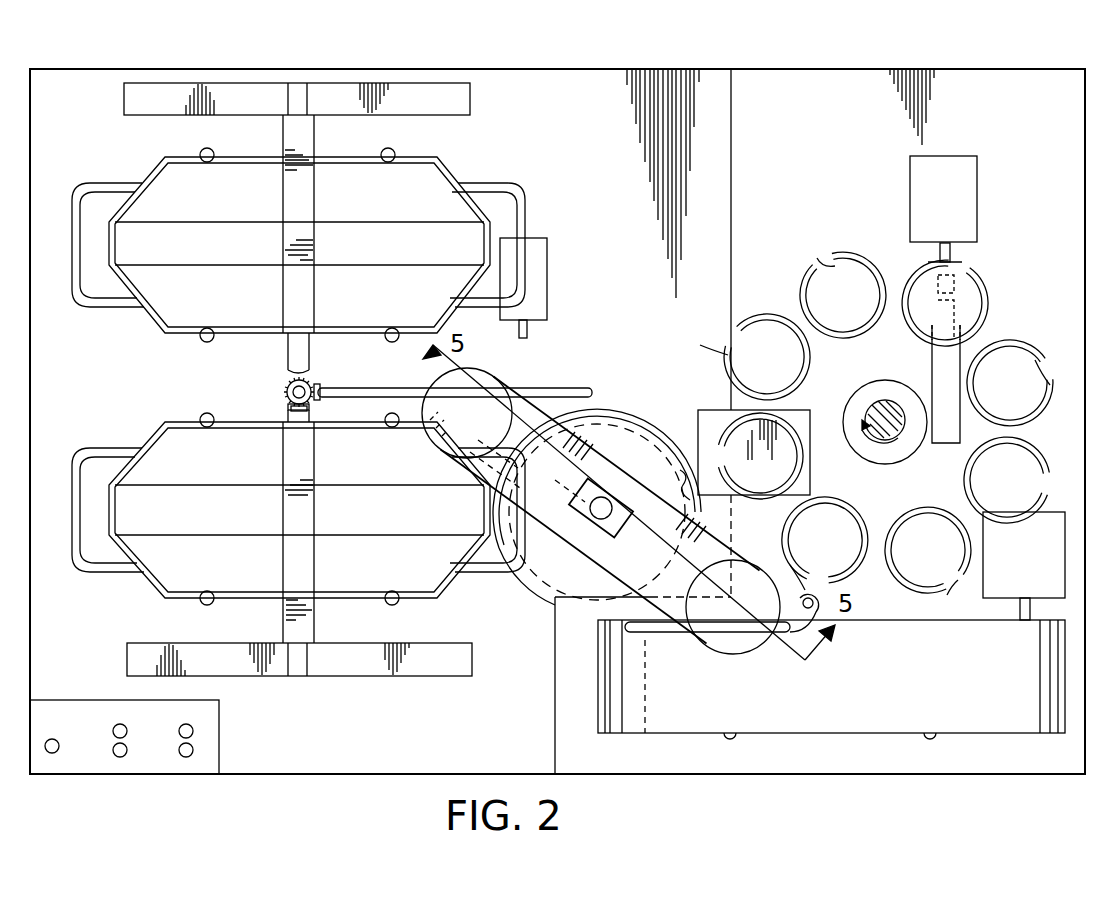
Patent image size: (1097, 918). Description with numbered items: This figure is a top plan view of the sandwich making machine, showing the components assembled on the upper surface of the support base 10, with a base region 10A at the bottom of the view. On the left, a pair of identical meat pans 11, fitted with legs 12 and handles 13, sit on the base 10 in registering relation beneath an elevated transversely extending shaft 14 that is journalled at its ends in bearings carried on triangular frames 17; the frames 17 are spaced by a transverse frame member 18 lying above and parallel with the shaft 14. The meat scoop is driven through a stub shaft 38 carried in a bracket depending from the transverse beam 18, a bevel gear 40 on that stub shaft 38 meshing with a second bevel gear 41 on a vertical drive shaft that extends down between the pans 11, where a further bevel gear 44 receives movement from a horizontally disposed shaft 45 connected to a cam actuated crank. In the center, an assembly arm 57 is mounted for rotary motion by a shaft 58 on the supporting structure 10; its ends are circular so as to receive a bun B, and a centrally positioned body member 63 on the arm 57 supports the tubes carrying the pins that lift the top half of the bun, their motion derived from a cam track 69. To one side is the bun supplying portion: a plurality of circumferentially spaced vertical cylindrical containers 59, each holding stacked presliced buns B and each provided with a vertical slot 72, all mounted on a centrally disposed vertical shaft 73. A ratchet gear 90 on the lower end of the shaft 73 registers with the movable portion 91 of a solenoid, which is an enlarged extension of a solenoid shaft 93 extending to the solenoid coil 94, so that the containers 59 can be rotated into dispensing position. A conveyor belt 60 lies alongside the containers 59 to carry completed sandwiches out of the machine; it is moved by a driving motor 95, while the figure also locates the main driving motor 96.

The support base 10 is at (722, 69).
The housing base 10A is at (815, 776).
The meat pans 11 is at (386, 264).
The legs 12 is at (206, 148).
The handles 13 is at (108, 308).
The shaft 14 is at (288, 372).
The triangular frames 17 is at (124, 100).
The transverse frame member 18 is at (316, 628).
The stub shaft 38 is at (288, 408).
The bevel gear 40 is at (287, 392).
The second bevel gear 41 is at (312, 382).
The bevel gear 44 is at (310, 405).
The horizontally disposed shaft 45 is at (530, 388).
The assembly arm 57 is at (672, 478).
The shaft 58 is at (615, 500).
The cylindrical containers 59 is at (772, 314).
The conveyor belt 60 is at (828, 714).
The body member 63 is at (596, 497).
The cam track 69 is at (628, 410).
The vertical slot 72 is at (882, 417).
The vertical shaft 73 is at (882, 400).
The ratchet gear 90 is at (905, 440).
The movable portion of solenoid 91 is at (932, 385).
The solenoid shaft 93 is at (952, 262).
The solenoid coil 94 is at (938, 224).
The driving motor 95 is at (1018, 584).
The main driving motor 96 is at (810, 475).
The bun B is at (478, 382).